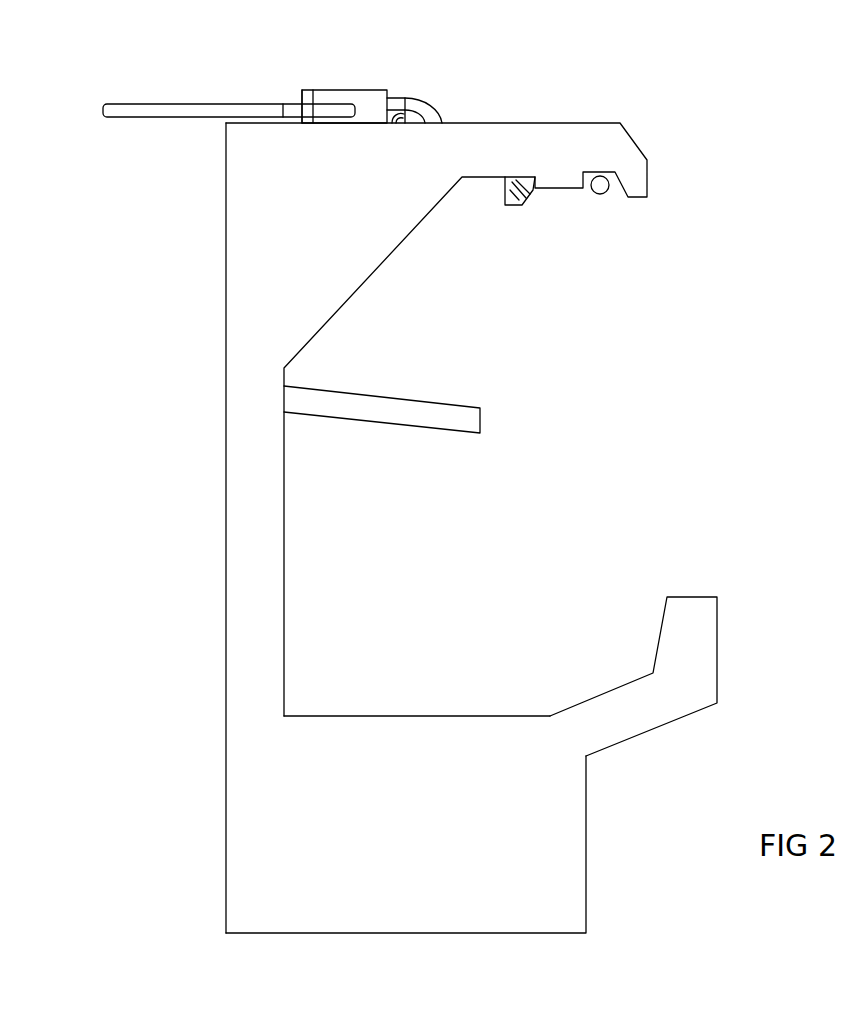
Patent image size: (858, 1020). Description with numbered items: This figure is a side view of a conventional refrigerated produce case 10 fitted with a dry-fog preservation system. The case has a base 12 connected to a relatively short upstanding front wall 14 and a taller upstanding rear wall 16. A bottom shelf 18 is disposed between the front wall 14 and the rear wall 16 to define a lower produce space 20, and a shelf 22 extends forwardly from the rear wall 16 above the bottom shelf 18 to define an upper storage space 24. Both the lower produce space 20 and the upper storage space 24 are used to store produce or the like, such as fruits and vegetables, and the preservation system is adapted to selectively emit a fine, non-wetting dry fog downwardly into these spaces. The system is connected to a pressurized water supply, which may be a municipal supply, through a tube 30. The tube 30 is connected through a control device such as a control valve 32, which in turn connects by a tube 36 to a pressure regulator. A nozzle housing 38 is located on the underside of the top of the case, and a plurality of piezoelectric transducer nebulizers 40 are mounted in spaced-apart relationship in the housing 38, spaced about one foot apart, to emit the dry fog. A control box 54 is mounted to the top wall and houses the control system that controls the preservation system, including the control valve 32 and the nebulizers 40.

The refrigerated produce case 10 is at (190, 605).
The base 12 is at (586, 905).
The front wall 14 is at (717, 663).
The rear wall 16 is at (257, 488).
The bottom shelf 18 is at (417, 716).
The lower produce space 20 is at (565, 560).
The shelf 22 is at (477, 433).
The upper storage space 24 is at (438, 356).
The tube 30 is at (168, 108).
The control valve 32 is at (368, 95).
The tube 36 is at (422, 112).
The nozzle housing 38 is at (505, 205).
The piezoelectric transducer nebulizers 40 is at (520, 205).
The control box 54 is at (302, 90).